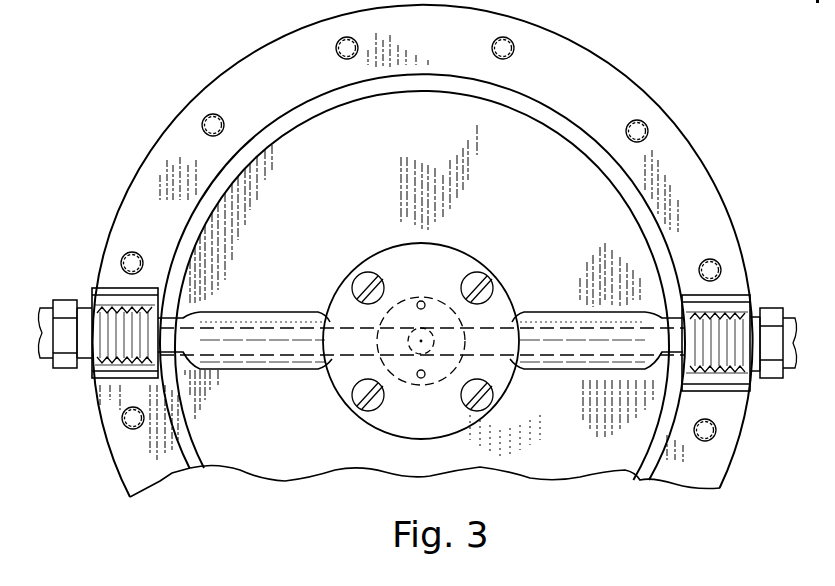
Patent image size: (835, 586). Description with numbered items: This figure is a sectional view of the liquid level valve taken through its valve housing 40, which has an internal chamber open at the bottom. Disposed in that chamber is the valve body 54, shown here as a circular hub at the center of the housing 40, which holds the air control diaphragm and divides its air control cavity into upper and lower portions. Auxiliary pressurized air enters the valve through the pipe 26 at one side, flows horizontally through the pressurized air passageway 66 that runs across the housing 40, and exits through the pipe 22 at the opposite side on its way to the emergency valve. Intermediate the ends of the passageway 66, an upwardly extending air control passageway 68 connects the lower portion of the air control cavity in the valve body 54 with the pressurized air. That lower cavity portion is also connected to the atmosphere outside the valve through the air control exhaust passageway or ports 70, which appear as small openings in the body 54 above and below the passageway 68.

The pipe 22 is at (790, 312).
The pipe 26 is at (46, 306).
The valve housing 40 is at (712, 176).
The valve body 54 is at (496, 400).
The pressurized air passageway 66 is at (248, 316).
The air control passageway 68 is at (437, 335).
The air control exhaust passageway or ports 70 is at (418, 373).